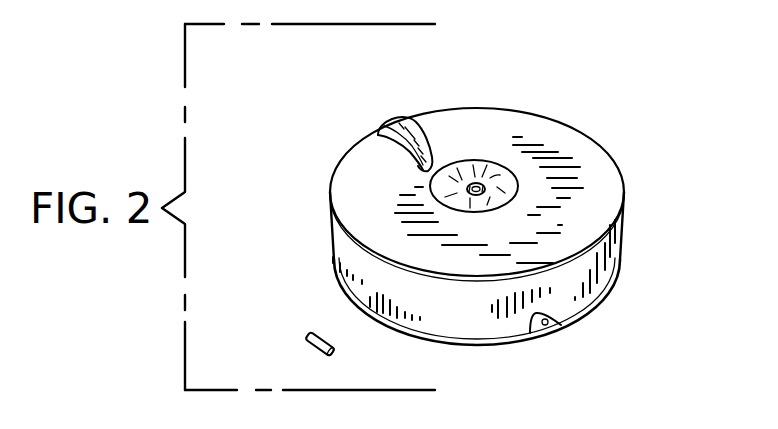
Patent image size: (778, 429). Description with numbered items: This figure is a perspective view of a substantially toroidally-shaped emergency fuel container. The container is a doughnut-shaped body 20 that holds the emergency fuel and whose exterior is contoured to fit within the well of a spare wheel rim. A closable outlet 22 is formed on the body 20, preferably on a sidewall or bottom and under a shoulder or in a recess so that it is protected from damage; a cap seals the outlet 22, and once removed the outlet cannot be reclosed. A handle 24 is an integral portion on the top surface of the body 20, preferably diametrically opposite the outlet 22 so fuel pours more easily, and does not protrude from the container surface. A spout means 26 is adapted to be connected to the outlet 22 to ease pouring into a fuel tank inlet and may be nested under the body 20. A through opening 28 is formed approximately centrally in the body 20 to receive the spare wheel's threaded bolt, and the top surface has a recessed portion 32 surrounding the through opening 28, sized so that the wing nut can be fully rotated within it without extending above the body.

The body 20 is at (324, 244).
The closable outlet 22 is at (558, 334).
The handle 24 is at (388, 118).
The spout means 26 is at (303, 339).
The through opening 28 is at (477, 183).
The recessed portion 32 is at (513, 174).